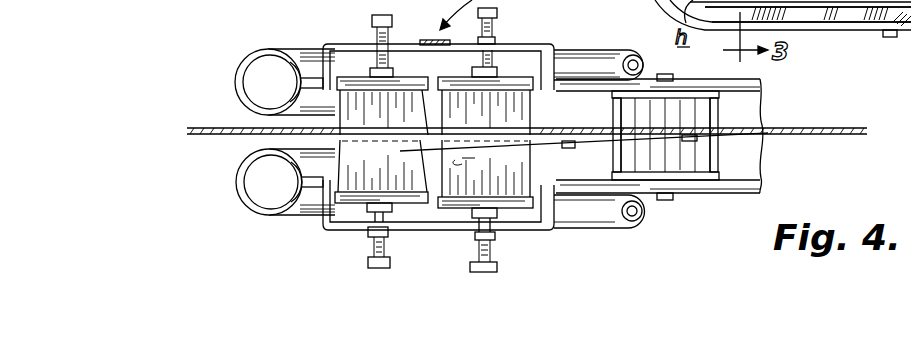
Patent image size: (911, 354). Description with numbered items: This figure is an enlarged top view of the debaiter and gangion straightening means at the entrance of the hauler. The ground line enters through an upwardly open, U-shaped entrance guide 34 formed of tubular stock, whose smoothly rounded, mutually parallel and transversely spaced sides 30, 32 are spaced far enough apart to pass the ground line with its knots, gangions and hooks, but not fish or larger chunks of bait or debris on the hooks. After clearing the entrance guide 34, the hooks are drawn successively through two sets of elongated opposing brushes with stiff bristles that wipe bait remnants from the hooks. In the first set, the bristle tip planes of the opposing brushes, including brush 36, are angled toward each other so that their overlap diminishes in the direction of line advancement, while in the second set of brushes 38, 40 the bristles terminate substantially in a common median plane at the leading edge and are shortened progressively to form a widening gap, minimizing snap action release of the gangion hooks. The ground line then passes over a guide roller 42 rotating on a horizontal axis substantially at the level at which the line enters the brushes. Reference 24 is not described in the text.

The guide rail 24 is at (813, 9).
The side of entrance guide 30 is at (238, 72).
The side of entrance guide 32 is at (250, 210).
The entrance guide 34 is at (367, 103).
The brush of first set 36 is at (362, 175).
The brush of second set 38 is at (503, 100).
The brush of second set 40 is at (512, 183).
The guide roller 42 is at (692, 158).